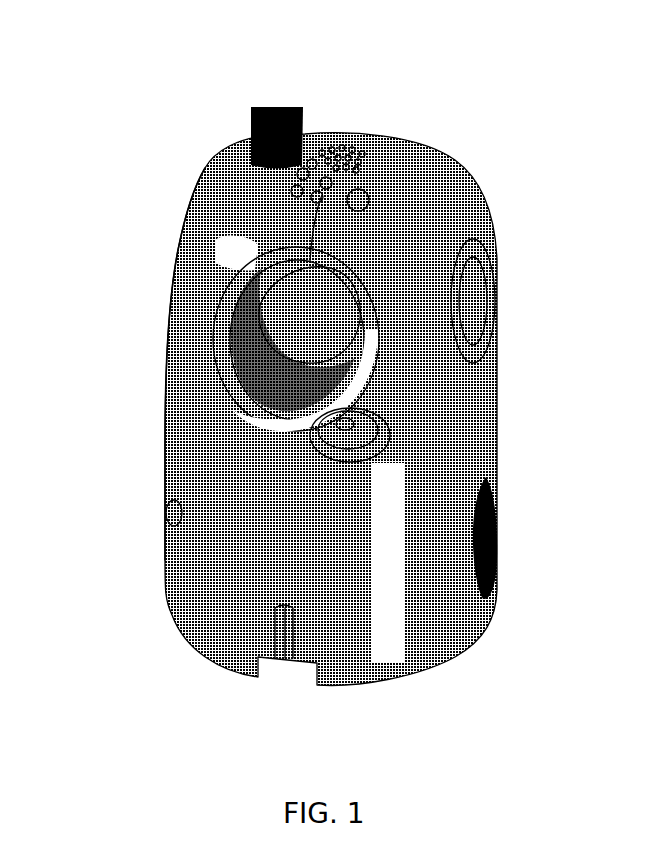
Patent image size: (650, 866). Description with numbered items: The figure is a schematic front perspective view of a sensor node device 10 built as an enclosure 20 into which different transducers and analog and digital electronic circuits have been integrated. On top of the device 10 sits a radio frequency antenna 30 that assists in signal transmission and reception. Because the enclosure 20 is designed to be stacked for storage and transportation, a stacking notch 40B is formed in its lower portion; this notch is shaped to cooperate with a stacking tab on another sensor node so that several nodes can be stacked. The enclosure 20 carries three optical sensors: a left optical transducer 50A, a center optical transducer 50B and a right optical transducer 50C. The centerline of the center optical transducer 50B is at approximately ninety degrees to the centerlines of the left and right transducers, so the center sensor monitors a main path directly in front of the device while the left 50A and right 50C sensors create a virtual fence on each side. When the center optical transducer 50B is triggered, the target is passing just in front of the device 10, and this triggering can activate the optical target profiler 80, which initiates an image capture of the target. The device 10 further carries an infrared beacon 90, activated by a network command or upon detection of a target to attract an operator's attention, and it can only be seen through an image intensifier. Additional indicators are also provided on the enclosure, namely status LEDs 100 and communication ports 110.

The device 10 is at (320, 360).
The enclosure 20 is at (490, 658).
The radio frequency (RF) antenna 30 is at (248, 122).
The stacking notch 40B is at (247, 643).
The left optical transducer 50A is at (180, 247).
The center optical transducer 50B is at (195, 335).
The right optical transducer 50C is at (417, 290).
The optical target profiler 80 is at (400, 433).
The infrared (IR) beacon 90 is at (378, 200).
The status LEDs 100 is at (325, 188).
The communication ports 110 is at (367, 158).